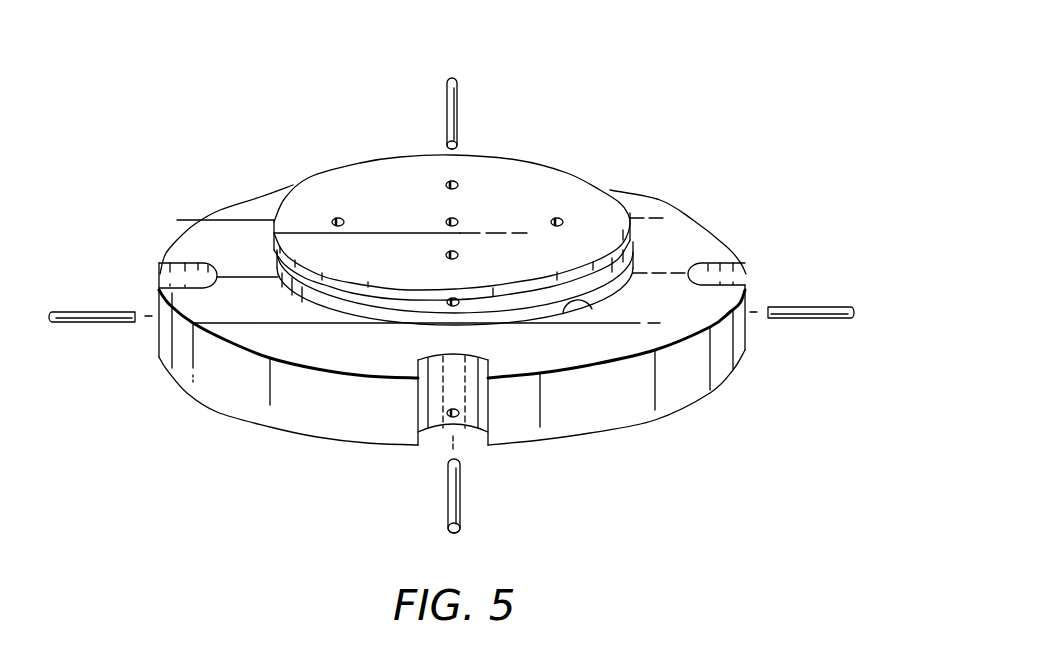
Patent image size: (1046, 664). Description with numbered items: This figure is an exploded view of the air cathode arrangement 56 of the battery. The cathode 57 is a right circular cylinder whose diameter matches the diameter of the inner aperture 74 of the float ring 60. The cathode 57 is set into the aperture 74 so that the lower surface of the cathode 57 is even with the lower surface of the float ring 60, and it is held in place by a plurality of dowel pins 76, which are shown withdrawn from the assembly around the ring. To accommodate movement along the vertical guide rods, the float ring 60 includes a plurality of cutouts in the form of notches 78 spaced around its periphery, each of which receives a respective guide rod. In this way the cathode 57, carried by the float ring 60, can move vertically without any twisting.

The air cathode arrangement 56 is at (458, 267).
The cathode 57 is at (408, 170).
The float ring 60 is at (648, 200).
The inner aperture 74 is at (590, 302).
The dowel pins 76 is at (458, 128).
The notches 78 is at (172, 263).